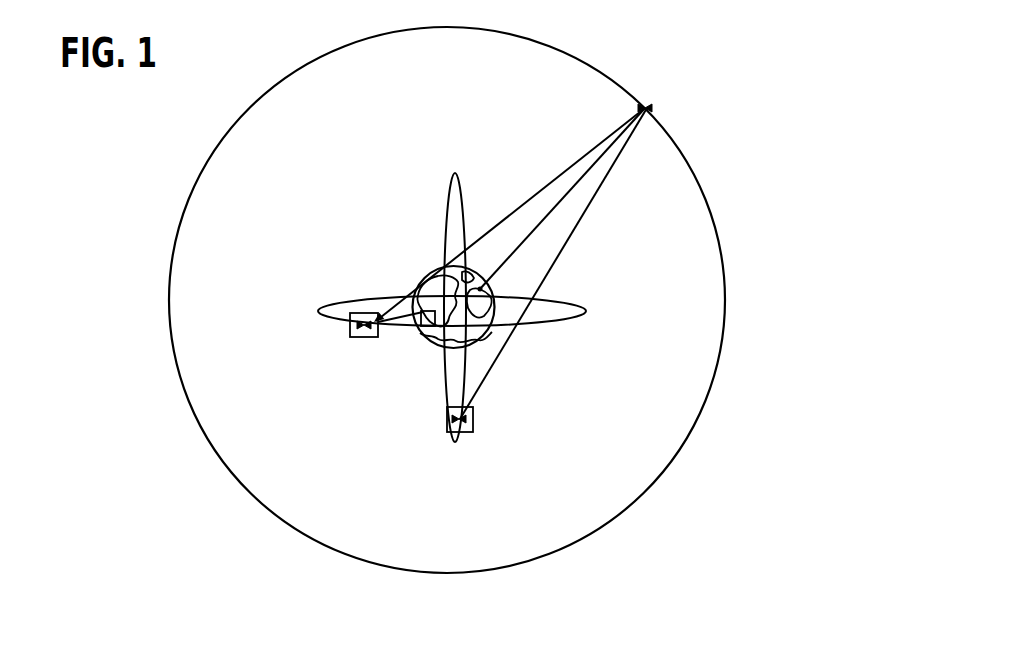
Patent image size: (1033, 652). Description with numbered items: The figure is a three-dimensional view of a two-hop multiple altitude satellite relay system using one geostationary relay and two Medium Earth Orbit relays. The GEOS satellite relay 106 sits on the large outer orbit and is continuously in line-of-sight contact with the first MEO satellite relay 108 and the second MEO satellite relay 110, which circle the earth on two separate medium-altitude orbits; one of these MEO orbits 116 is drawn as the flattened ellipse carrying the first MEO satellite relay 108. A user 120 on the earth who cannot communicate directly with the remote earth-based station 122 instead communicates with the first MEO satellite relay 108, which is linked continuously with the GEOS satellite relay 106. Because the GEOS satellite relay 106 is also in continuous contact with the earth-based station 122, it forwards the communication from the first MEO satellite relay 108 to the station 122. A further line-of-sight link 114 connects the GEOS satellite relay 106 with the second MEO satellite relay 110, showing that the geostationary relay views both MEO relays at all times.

The GEOS satellite relay geos1 106 is at (654, 94).
The MEO satellite relay meo1 108 is at (345, 330).
The MEO satellite relay meo2 110 is at (477, 438).
The communication link between geos1 and meo2 114 is at (578, 226).
The medium earth orbit of meo1 116 is at (373, 295).
The user 120 is at (428, 342).
The remote earth-based station 122 is at (480, 288).